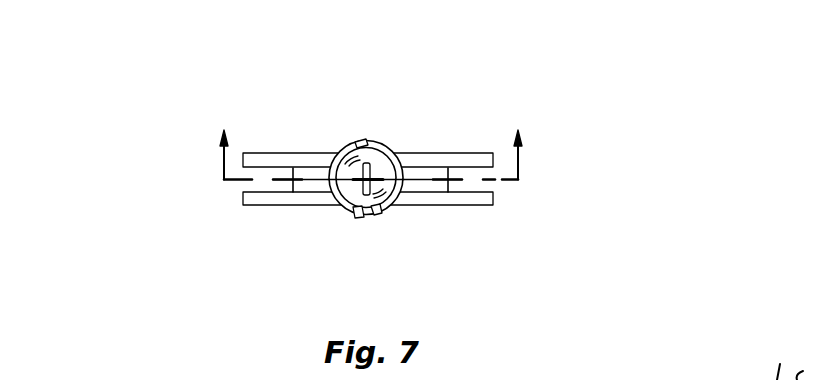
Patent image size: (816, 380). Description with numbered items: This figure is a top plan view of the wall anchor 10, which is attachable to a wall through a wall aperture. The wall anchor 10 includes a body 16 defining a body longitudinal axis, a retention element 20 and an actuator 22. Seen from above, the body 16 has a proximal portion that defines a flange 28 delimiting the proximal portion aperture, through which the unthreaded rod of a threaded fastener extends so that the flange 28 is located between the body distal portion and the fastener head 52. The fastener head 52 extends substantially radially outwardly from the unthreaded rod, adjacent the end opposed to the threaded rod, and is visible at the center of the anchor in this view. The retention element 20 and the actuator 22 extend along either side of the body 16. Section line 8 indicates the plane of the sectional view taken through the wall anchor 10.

The section line 8- 8 is at (371, 136).
The wall anchor 10 is at (87, 204).
The body 16 is at (402, 138).
The retention element 20 is at (274, 56).
The actuator 22 is at (367, 140).
The flange 28 is at (360, 213).
The fastener head 52 is at (373, 213).